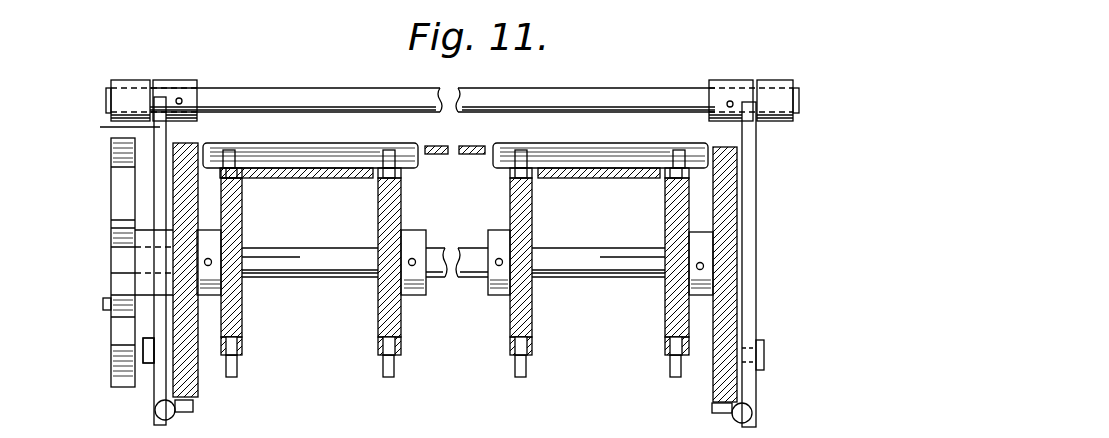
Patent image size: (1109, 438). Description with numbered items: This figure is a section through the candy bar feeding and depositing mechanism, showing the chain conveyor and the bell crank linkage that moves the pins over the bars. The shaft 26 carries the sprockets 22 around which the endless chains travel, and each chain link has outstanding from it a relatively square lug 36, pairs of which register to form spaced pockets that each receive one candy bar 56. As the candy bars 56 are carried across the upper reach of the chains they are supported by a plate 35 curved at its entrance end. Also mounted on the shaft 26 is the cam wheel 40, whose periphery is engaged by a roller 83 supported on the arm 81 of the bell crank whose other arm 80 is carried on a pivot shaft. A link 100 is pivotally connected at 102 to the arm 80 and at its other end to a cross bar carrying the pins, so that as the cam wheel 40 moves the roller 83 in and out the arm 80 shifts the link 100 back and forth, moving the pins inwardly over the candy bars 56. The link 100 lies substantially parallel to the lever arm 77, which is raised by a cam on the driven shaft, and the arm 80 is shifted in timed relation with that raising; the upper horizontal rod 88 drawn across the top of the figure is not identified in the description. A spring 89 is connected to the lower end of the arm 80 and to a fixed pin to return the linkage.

The lever arm 77 is at (142, 86).
The upper rod 88 is at (297, 96).
The candy bar 56 is at (309, 152).
The arm of the bell crank 81 is at (116, 127).
The cam wheel 40 is at (122, 187).
The plate 35 is at (305, 179).
The sprocket 22 is at (397, 212).
The arm of bell crank lever 80 is at (756, 166).
The shaft 26 is at (311, 278).
The lug 36 is at (237, 370).
The roller 83 is at (103, 300).
The pivotal connection 102 is at (136, 353).
The link 100 is at (147, 364).
The spring 89 is at (180, 420).